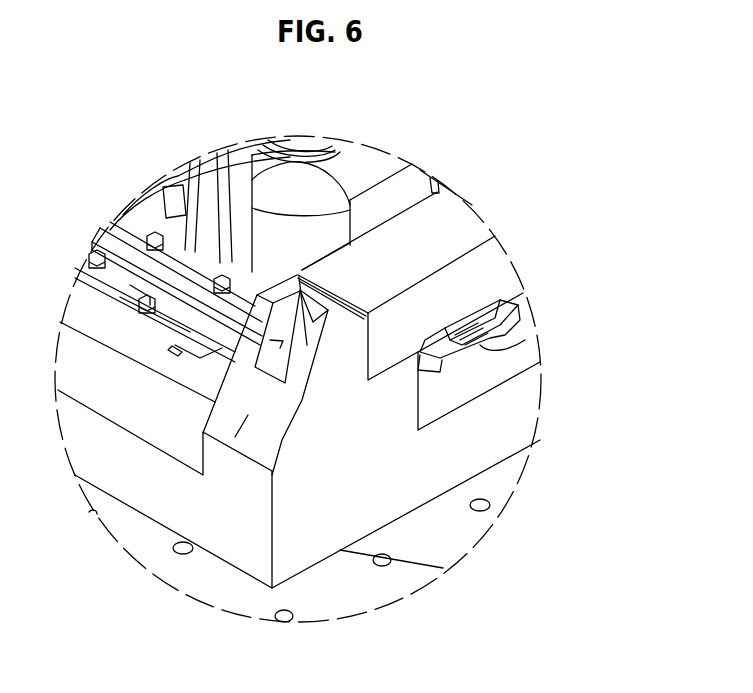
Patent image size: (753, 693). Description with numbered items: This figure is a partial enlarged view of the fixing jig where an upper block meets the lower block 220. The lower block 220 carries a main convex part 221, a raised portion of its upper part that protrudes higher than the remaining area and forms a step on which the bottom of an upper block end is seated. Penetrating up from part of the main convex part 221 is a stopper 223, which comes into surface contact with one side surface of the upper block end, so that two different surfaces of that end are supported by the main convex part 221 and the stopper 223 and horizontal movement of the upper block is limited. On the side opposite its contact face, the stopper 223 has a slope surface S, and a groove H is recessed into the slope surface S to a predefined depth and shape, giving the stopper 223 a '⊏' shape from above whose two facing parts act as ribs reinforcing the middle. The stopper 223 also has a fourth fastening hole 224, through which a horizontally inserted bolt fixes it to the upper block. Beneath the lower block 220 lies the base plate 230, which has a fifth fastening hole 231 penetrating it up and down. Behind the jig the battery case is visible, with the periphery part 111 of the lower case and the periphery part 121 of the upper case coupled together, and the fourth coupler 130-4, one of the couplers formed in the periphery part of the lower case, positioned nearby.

The periphery part of the upper case 121 is at (160, 262).
The periphery part of the lower case 111 is at (127, 290).
The lower block 220 is at (498, 460).
The main convex part 221 is at (395, 405).
The stopper 223 is at (338, 360).
The fourth fastening hole 224 is at (302, 273).
The base plate 230 is at (457, 530).
The fifth fastening hole 231 is at (385, 566).
The fourth coupler 130-4 is at (490, 350).
The groove H is at (268, 343).
The slope surface S is at (248, 415).